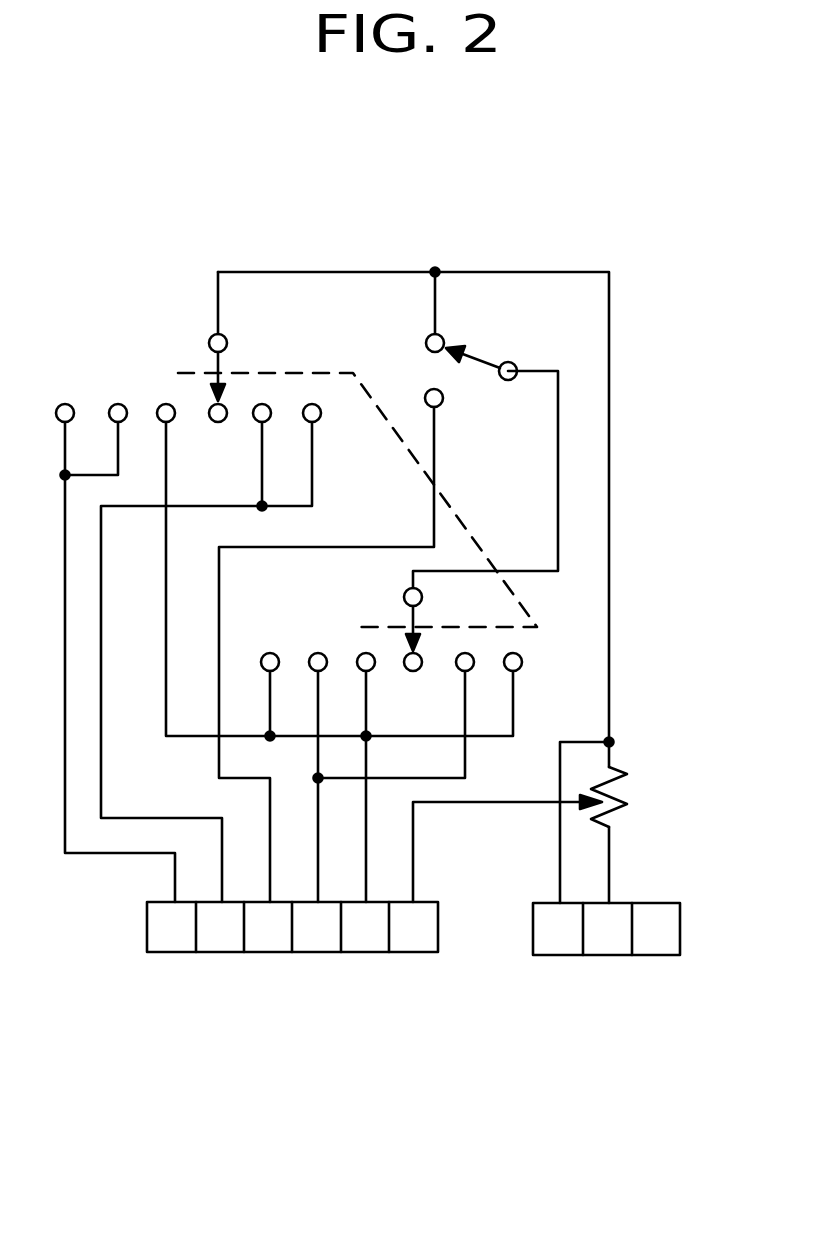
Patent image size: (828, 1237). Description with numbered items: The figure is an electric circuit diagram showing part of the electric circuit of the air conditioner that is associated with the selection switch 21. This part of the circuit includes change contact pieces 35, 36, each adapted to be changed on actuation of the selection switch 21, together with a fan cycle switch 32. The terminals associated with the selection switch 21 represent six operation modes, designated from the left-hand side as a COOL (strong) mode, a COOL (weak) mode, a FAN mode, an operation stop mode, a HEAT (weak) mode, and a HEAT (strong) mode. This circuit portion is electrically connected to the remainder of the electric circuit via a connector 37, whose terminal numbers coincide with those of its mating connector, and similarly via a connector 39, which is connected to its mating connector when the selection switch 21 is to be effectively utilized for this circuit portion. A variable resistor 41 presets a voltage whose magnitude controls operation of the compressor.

The selection switch 21 is at (483, 550).
The fan cycle switch 32 is at (483, 360).
The change contact piece 35 is at (213, 368).
The change contact piece 36 is at (415, 617).
The connector 37 is at (177, 953).
The connector 39 is at (607, 956).
The variable resistor 41 is at (632, 790).